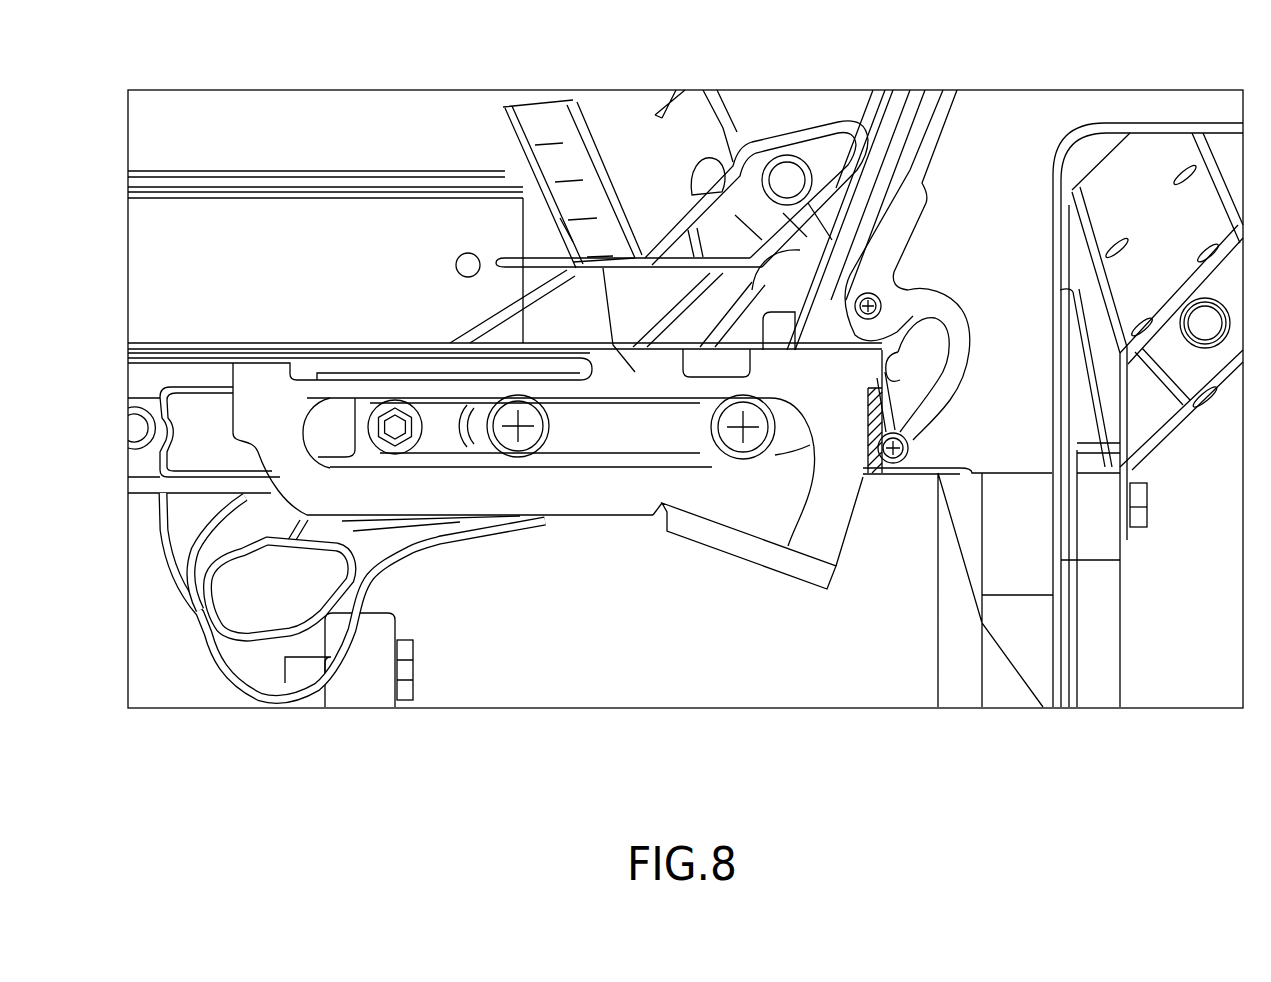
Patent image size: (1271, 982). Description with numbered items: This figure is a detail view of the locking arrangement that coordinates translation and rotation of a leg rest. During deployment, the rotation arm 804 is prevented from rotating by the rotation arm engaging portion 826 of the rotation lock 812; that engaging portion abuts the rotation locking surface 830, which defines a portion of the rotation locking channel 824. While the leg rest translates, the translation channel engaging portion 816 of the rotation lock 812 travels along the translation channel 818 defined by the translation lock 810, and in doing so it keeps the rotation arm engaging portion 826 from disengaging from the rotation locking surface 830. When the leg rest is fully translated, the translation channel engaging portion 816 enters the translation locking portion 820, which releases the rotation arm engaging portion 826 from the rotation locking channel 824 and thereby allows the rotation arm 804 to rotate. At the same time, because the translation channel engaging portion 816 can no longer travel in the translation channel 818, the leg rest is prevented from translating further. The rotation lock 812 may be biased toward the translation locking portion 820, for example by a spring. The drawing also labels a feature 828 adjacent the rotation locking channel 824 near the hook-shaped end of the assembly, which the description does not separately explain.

The rotation arm 804 is at (1057, 110).
The translation lock 810 is at (633, 368).
The rotation lock 812 is at (650, 437).
The translation channel engaging portion 816 is at (742, 456).
The translation channel 818 is at (410, 456).
The translation locking portion 820 is at (754, 545).
The rotation locking channel 824 is at (928, 336).
The rotation arm engaging portion 826 is at (876, 472).
The hook arm 828 is at (917, 375).
The rotation locking surface 830 is at (910, 316).